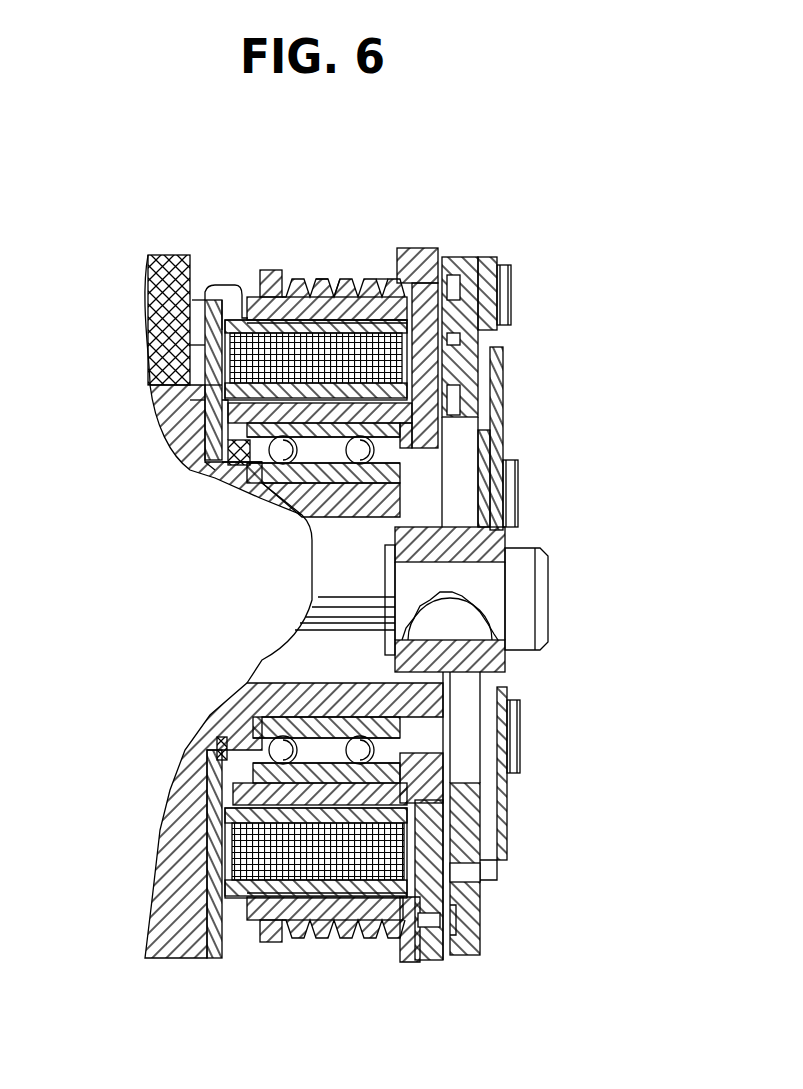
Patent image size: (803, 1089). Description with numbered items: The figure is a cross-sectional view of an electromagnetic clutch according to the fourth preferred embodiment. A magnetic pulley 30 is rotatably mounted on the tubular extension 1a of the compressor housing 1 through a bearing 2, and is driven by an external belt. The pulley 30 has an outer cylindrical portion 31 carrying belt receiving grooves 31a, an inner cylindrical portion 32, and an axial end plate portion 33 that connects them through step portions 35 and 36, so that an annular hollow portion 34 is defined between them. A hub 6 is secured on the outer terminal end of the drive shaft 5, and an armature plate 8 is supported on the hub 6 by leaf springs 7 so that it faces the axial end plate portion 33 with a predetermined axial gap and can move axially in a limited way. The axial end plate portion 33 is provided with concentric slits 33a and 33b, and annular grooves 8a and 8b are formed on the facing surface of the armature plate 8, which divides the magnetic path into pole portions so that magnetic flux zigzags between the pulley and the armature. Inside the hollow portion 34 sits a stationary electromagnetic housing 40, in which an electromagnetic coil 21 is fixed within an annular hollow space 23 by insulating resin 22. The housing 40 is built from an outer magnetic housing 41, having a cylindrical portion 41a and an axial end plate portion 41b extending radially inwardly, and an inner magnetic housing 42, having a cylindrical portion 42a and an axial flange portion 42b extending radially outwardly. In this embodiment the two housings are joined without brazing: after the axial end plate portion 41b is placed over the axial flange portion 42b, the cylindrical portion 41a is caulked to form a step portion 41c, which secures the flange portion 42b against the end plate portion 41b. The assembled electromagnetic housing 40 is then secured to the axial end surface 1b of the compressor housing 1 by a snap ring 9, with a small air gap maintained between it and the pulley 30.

The compressor housing 1 is at (160, 253).
The tubular extension 1a is at (350, 507).
The axial end surface 1b is at (200, 408).
The bearing 2 is at (292, 470).
The drive shaft 5 is at (360, 608).
The hub 6 is at (516, 537).
The leaf springs 7 is at (487, 348).
The armature plate 8 is at (468, 262).
The annular shaped groove 8a is at (490, 830).
The annular shaped groove 8b is at (457, 927).
The snap ring 9 is at (205, 468).
The electromagnetic coil 21 is at (320, 345).
The insulating resin 22 is at (393, 300).
The annular hollow space 23 is at (215, 392).
The magnetic pulley 30 is at (382, 274).
The outer cylindrical portion 31 is at (302, 312).
The belt receiving grooves 31a is at (328, 305).
The inner cylindrical portion 32 is at (232, 492).
The axial end plate portion 33 is at (450, 312).
The concentric slit 33a is at (478, 818).
The concentric slit 33b is at (430, 927).
The annular hollow portion 34 is at (340, 305).
The step portion 35 is at (413, 263).
The step portion 36 is at (413, 447).
The electromagnetic housing 40 is at (203, 296).
The outer magnetic housing 41 is at (150, 295).
The cylindrical portion 41a is at (223, 300).
The axial end plate portion 41b is at (165, 350).
The step portion 41c is at (216, 300).
The inner magnetic housing 42 is at (200, 415).
The cylindrical portion 42a is at (322, 403).
The axial flange portion 42b is at (153, 315).